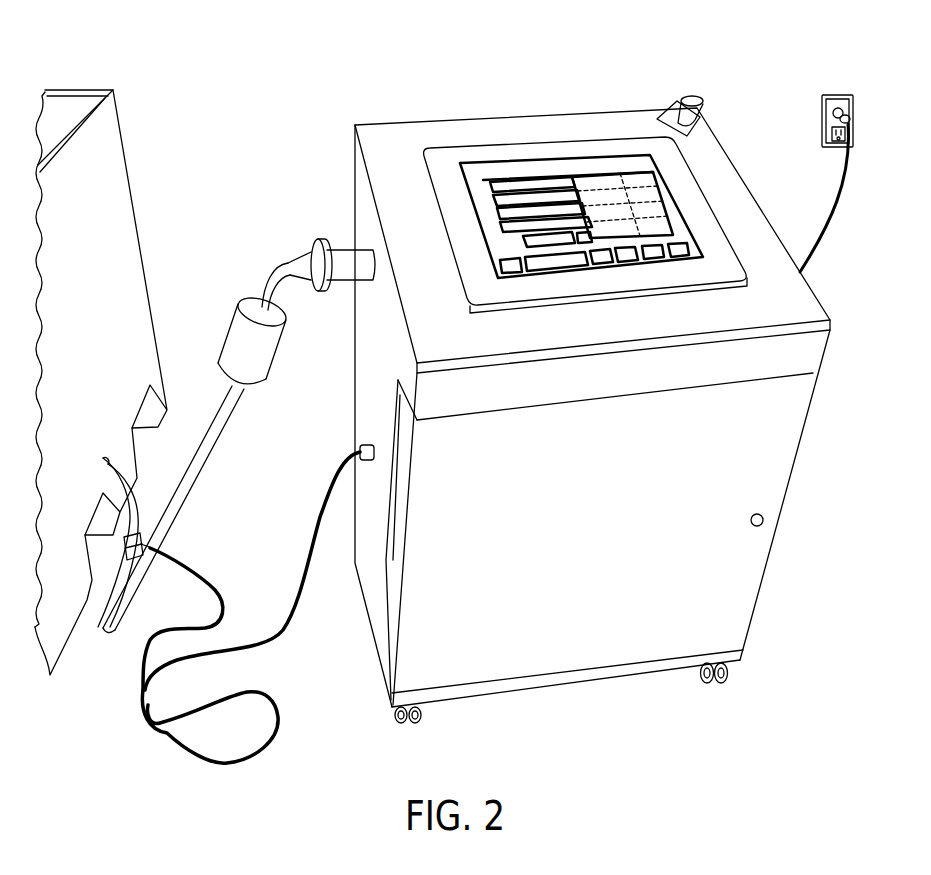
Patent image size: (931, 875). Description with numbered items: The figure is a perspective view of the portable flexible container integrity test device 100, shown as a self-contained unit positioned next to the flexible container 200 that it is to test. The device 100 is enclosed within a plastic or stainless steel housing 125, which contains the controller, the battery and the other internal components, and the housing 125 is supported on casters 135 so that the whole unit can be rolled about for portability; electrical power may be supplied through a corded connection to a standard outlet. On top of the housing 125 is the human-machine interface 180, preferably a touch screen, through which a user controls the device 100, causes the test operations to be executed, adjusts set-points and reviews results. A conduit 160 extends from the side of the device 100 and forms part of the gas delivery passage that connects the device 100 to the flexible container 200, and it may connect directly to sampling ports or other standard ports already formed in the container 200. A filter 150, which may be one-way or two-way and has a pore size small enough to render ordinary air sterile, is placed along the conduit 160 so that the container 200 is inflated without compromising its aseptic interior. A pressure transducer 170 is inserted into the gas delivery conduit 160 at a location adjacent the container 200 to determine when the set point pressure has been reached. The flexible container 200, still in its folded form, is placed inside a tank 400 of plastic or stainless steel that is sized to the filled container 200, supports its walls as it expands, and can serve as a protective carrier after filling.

The portable flexible container integrity test device 100 is at (612, 72).
The housing 125 is at (367, 133).
The casters 135 is at (424, 713).
The filter 150 is at (238, 327).
The conduit 160 is at (280, 263).
The pressure transducer 170 is at (143, 535).
The human-machine interface 180 is at (520, 168).
The flexible container 200 is at (68, 108).
The tank 400 is at (110, 207).